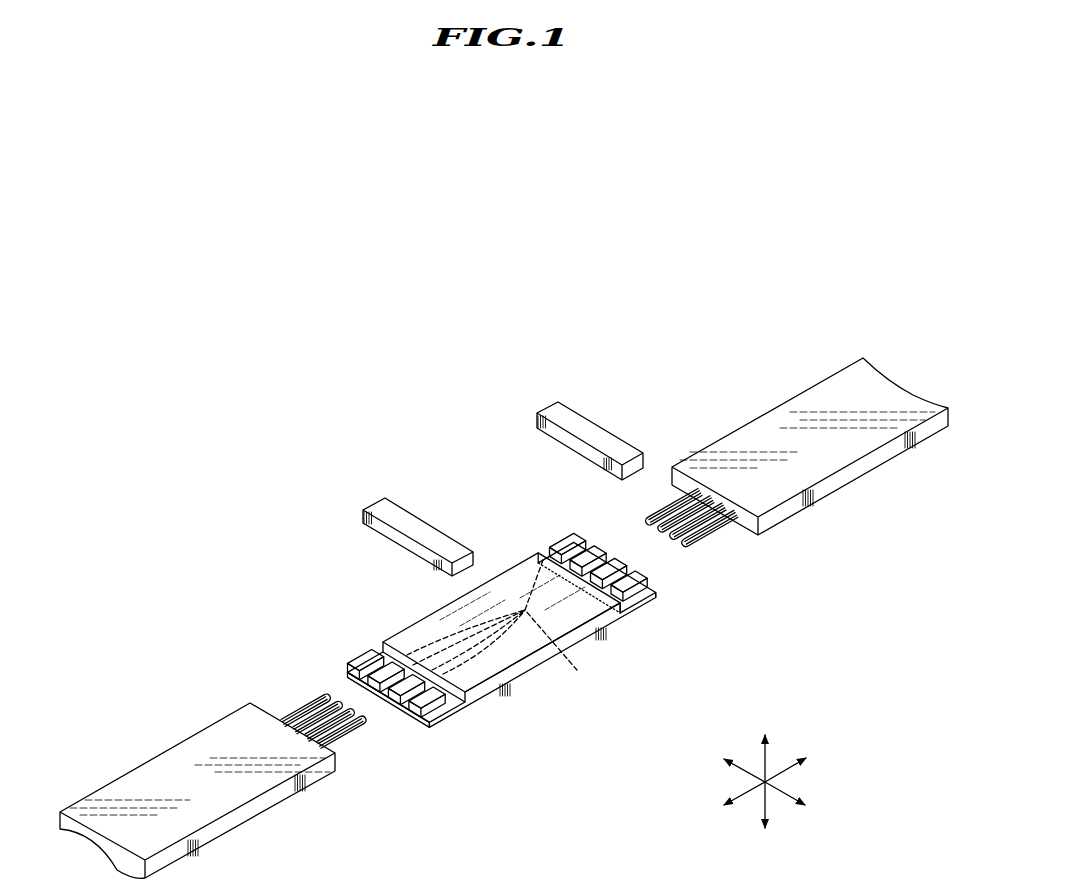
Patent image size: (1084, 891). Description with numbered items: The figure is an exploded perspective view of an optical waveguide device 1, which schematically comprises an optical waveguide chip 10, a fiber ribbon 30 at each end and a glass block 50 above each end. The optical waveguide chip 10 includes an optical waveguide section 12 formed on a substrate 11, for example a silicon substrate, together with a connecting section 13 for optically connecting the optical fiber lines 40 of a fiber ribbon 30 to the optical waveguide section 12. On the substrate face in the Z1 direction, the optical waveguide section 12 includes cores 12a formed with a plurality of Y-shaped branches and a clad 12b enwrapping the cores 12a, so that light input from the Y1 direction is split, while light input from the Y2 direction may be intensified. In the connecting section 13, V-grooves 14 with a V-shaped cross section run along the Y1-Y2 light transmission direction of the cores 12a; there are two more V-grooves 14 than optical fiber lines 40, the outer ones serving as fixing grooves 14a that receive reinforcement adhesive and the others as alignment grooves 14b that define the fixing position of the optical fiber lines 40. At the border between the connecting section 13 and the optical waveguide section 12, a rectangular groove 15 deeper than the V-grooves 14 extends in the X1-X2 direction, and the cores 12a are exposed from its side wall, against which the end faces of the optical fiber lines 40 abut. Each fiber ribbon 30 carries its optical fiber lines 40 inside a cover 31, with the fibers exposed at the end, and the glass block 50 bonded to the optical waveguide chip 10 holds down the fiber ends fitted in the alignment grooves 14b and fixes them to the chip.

The optical waveguide device 1 is at (744, 314).
The optical waveguide chip 10 is at (488, 493).
The substrate 11 is at (607, 633).
The optical waveguide section 12 is at (627, 686).
The cores 12a is at (552, 642).
The clad 12b is at (513, 655).
The connecting section 13 is at (555, 538).
The V-grooves 14 is at (463, 781).
The fixing grooves 14a is at (362, 672).
The alignment grooves 14b is at (417, 700).
The rectangular groove 15 is at (623, 600).
The fiber ribbon 30 is at (213, 644).
The cover 31 is at (205, 743).
The optical fiber lines 40 is at (297, 710).
The glass block 50 is at (410, 518).